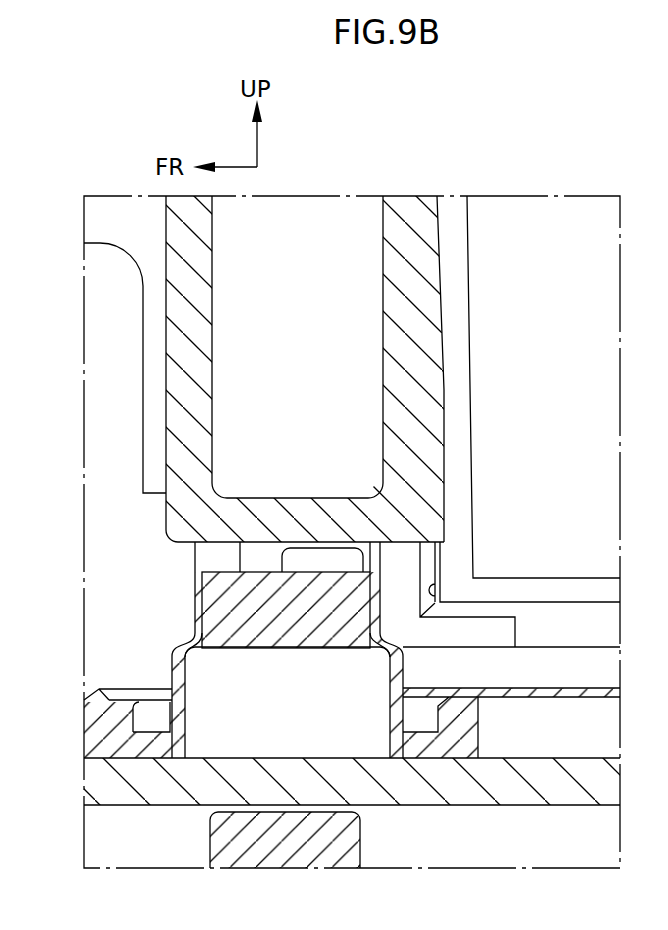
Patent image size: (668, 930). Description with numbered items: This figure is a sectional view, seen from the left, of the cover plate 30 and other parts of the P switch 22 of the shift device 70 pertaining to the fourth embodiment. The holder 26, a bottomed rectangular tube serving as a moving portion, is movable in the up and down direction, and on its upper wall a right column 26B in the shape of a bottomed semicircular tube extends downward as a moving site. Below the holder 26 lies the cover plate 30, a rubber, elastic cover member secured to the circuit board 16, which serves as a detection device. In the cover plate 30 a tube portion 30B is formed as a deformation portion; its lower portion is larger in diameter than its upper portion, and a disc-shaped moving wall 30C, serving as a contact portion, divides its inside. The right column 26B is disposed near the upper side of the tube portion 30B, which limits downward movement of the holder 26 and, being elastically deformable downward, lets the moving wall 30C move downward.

The shift device 70 is at (501, 165).
The P switch 22 is at (573, 215).
The holder 26 is at (166, 337).
The right column 26B is at (444, 332).
The cover plate 30 is at (118, 689).
The tube portion 30B is at (176, 647).
The moving wall 30C is at (213, 572).
The circuit board 16 is at (164, 806).